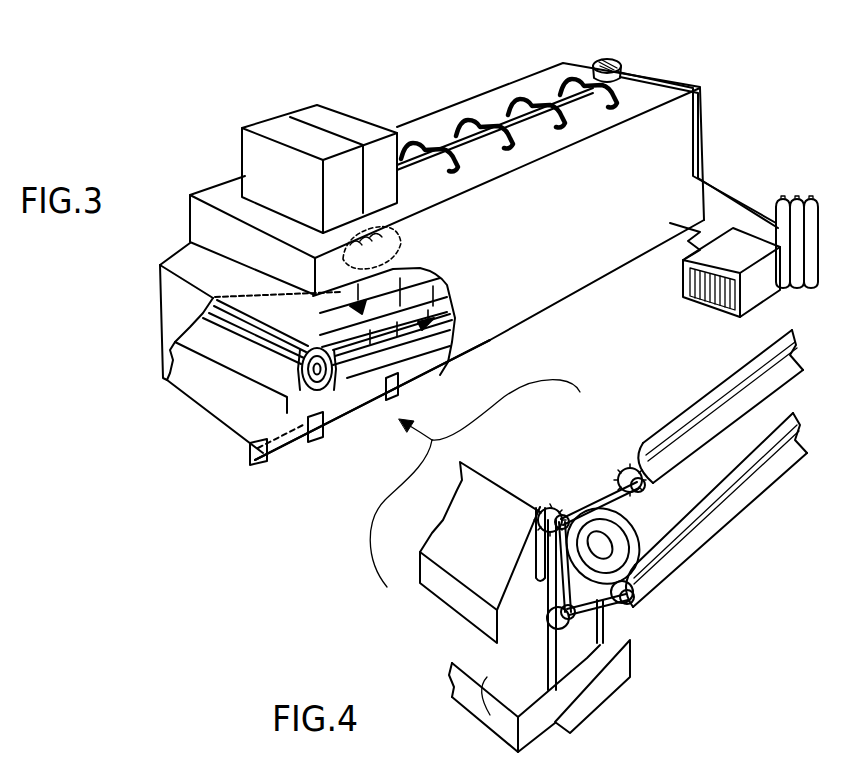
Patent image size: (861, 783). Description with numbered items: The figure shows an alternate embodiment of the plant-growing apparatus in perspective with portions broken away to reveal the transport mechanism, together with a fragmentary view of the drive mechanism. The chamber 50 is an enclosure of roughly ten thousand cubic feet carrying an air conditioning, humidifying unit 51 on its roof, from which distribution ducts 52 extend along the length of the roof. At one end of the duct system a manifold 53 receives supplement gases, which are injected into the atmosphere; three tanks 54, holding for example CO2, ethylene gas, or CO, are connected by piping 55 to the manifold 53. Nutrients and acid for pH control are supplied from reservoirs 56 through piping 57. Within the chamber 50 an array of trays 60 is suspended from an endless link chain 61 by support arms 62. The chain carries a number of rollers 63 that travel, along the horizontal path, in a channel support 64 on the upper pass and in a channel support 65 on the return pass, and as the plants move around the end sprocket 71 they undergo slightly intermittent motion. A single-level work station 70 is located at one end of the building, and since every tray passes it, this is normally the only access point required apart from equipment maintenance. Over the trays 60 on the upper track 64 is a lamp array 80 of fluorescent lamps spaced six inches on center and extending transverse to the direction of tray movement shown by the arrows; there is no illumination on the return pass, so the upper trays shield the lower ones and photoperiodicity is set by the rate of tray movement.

In FIG. 3, the chamber 50 is at (497, 83).
In FIG. 3, the air conditioning, humidifying unit 51 is at (313, 120).
In FIG. 3, the distribution ducts 52 is at (452, 158).
In FIG. 3, the manifold 53 is at (621, 73).
In FIG. 3, the tanks 54 is at (772, 202).
In FIG. 3, the piping 55 is at (747, 177).
In FIG. 3, the reservoirs 56 is at (682, 277).
In FIG. 3, the piping 57 is at (680, 242).
In FIG. 3, the lamp array 80 is at (393, 245).
In FIG. 3, the work station 70 is at (216, 397).
In FIG. 3, the trays 60 is at (250, 447).
In FIG. 4, the trays 60 is at (480, 620).
In FIG. 3, the endless link chain 61 is at (323, 393).
In FIG. 4, the endless link chain 61 is at (600, 505).
In FIG. 4, the support arms 62 is at (537, 550).
In FIG. 4, the rollers 63 is at (553, 505).
In FIG. 3, the channel support (upper pass) 64 is at (393, 312).
In FIG. 4, the channel support (upper pass) 64 is at (683, 452).
In FIG. 3, the channel support (return pass) 65 is at (446, 333).
In FIG. 4, the channel support (return pass) 65 is at (737, 502).
In FIG. 3, the end sprocket 71 is at (333, 413).
In FIG. 4, the end sprocket 71 is at (593, 477).